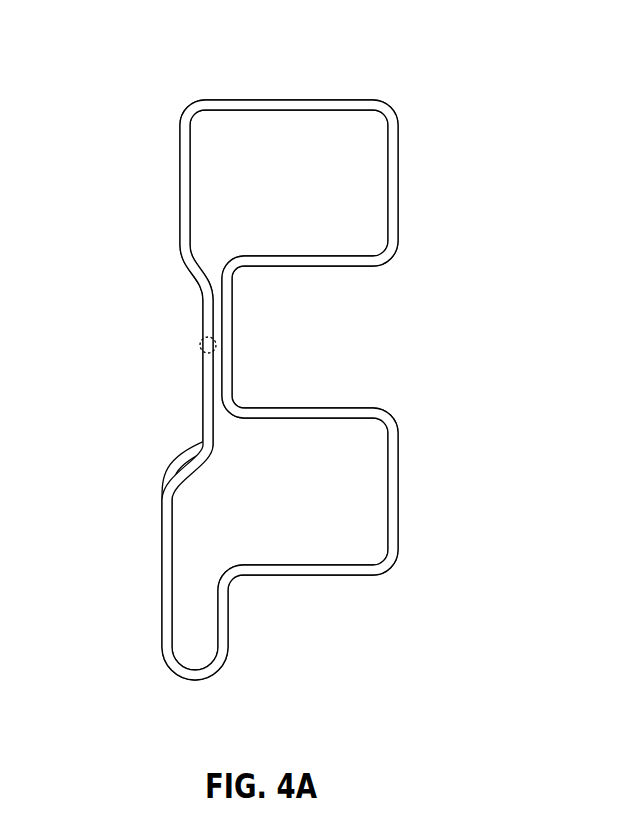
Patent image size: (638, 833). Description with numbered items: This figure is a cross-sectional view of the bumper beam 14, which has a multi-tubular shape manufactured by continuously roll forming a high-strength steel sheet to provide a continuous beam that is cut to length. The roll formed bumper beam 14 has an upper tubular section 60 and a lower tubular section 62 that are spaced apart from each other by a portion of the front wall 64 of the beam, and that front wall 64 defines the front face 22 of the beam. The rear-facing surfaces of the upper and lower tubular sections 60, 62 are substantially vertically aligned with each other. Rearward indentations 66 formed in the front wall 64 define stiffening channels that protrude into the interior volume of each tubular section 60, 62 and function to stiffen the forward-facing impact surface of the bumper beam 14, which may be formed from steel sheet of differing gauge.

The bumper beam 14 is at (170, 92).
The upper tubular section 60 is at (396, 110).
The lower tubular section 62 is at (396, 412).
The front face 22 is at (202, 383).
The front wall 64 is at (202, 316).
The rearward indentations 66 is at (195, 277).